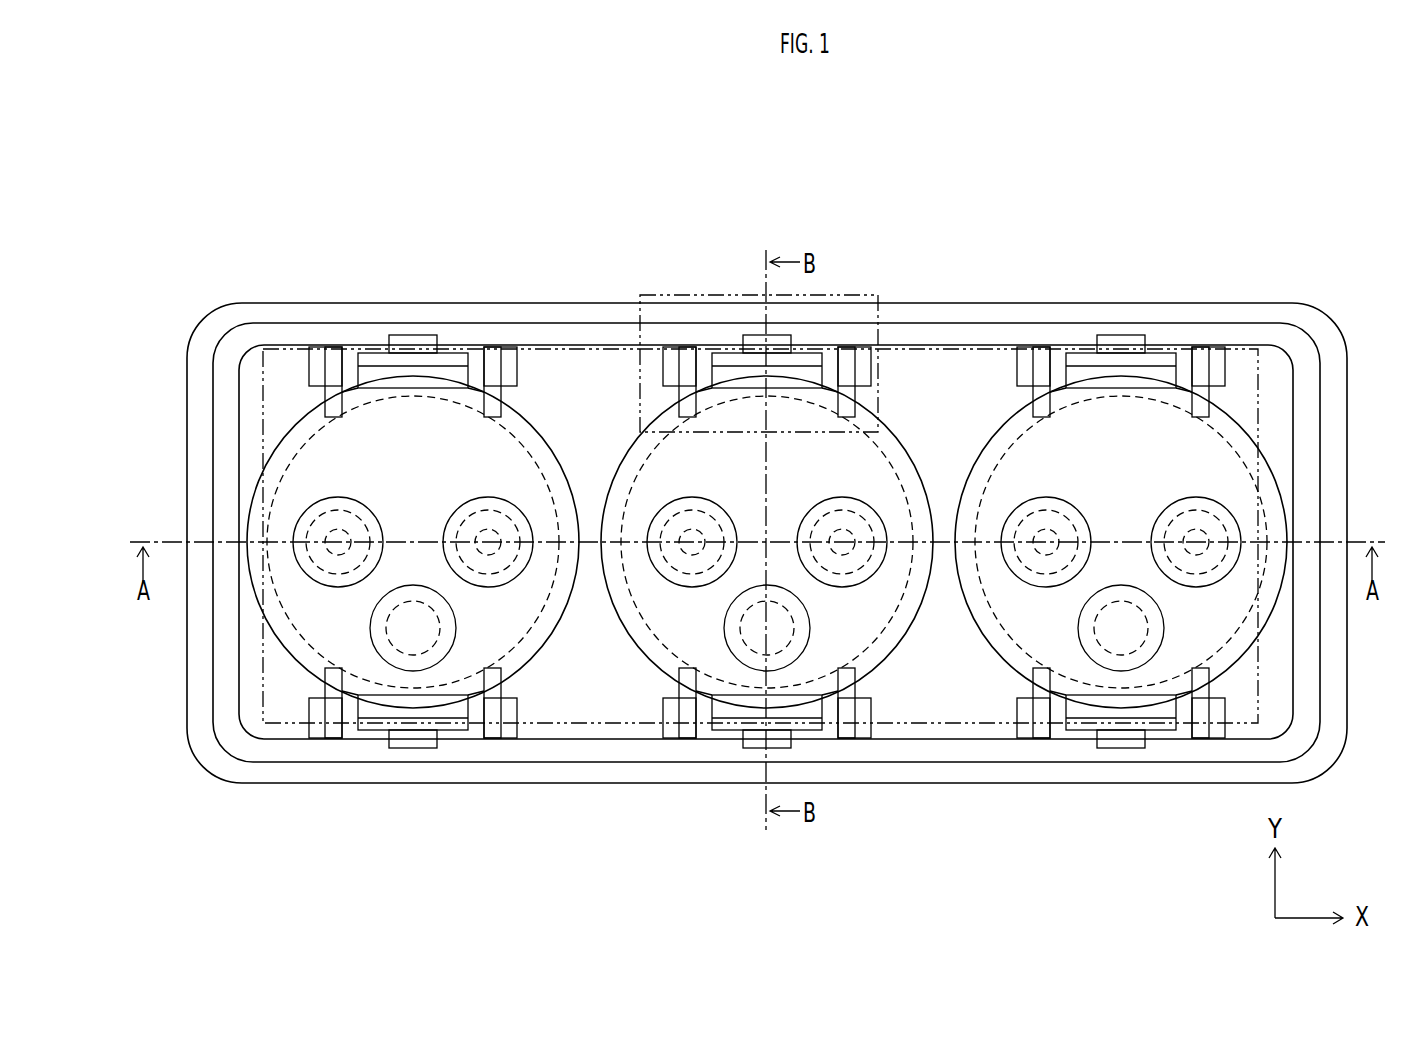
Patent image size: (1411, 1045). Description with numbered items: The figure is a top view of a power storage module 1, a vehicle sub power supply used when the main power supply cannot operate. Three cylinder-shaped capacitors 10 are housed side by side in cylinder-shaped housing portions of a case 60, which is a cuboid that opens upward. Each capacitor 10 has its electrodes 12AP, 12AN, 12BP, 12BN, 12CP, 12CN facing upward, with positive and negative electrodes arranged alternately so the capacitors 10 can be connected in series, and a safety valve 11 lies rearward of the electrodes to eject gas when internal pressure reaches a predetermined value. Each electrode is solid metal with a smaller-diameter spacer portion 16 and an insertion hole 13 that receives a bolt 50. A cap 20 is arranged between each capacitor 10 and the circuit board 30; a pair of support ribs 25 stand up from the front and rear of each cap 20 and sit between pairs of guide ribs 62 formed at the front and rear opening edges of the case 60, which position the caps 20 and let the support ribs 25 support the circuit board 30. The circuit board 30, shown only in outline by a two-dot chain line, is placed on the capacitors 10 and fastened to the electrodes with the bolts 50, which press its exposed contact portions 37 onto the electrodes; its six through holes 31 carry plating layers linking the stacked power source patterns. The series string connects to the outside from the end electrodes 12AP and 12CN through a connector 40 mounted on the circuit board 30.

The power storage module 1 is at (811, 184).
The capacitor 10 is at (640, 475).
The safety valve 11 is at (418, 640).
The electrode 12AP is at (247, 544).
The electrode 12AN is at (503, 555).
The electrode 12BP is at (710, 550).
The electrode 12BN is at (858, 552).
The electrode 12CP is at (1050, 552).
The electrode 12CN is at (1205, 553).
The insertion hole 13 is at (312, 521).
The spacer portion 16 is at (333, 583).
The cap 20 is at (1002, 428).
The support rib 25 is at (493, 367).
The circuit board 30 is at (1257, 397).
The through hole 31 is at (322, 505).
The contact portion 37 is at (345, 578).
The connector 40 is at (838, 293).
The bolt 50 is at (337, 494).
The case 60 is at (1130, 302).
The guide rib 62 is at (317, 357).